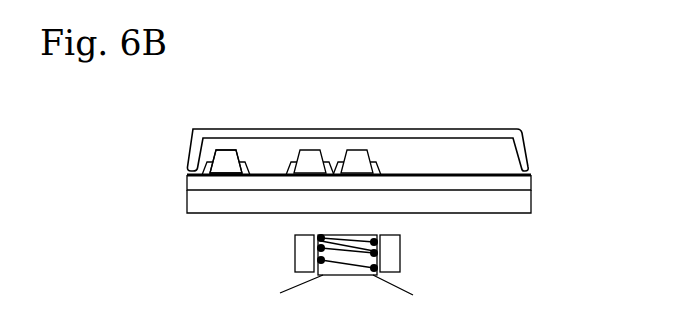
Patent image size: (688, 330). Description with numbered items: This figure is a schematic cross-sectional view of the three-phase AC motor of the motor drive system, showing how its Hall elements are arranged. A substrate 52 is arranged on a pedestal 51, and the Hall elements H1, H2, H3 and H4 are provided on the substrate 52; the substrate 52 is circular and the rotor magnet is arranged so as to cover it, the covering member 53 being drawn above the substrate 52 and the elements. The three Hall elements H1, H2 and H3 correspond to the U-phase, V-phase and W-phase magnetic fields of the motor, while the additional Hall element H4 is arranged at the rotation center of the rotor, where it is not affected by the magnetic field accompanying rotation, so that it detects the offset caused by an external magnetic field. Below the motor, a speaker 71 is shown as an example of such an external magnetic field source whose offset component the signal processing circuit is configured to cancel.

The cover member 53 is at (526, 164).
The substrate 52 is at (522, 185).
The pedestal 51 is at (514, 195).
The Hall element H1 is at (316, 153).
The Hall element H2 is at (232, 153).
The Hall element H3 is at (226, 161).
The Hall element H4 is at (365, 153).
The speaker 71 is at (273, 254).